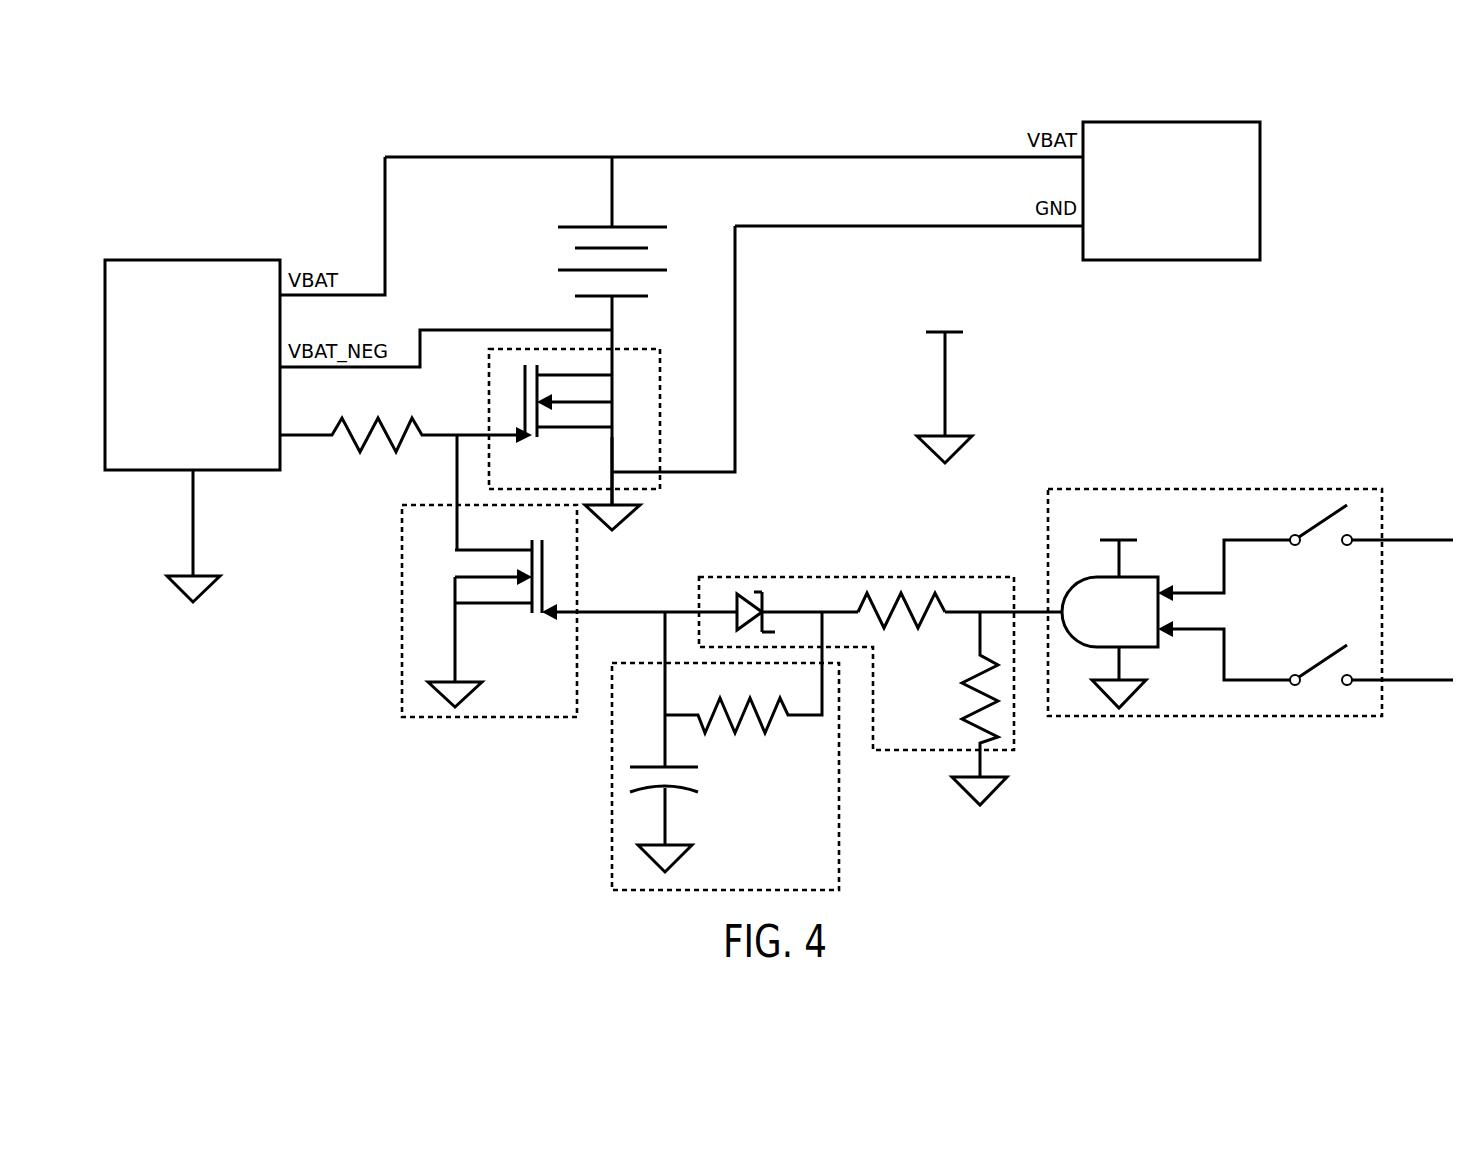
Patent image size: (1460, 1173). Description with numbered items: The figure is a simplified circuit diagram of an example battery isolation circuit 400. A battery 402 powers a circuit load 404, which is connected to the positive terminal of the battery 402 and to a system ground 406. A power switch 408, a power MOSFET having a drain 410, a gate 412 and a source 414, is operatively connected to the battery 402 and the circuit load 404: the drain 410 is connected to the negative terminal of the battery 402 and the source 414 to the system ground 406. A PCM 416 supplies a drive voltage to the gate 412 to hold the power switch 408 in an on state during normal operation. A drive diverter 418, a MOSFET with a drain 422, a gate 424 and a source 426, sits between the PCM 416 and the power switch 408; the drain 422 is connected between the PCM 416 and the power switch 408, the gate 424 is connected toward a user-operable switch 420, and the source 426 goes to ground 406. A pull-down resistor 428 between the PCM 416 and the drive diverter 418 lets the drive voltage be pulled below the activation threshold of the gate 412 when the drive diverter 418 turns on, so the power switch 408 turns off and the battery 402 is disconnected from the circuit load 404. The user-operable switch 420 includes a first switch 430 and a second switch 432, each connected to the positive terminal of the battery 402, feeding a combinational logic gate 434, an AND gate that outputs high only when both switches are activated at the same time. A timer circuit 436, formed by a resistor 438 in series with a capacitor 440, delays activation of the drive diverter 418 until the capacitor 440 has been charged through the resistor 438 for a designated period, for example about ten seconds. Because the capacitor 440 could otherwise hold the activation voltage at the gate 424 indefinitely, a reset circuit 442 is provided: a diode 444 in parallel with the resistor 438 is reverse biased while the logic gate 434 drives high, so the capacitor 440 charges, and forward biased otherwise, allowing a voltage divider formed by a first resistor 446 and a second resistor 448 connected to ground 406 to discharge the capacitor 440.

The battery isolation circuit 400 is at (1362, 146).
The battery 402 is at (652, 225).
The circuit load 404 is at (1156, 218).
The system ground 406 is at (946, 378).
The power switch 408 is at (638, 346).
The drain 410 is at (612, 374).
The gate 412 is at (525, 400).
The source 414 is at (612, 472).
The PCM 416 is at (176, 419).
The drive diverter 418 is at (402, 602).
The user-operable switch 420 is at (1290, 489).
The drain 422 is at (455, 545).
The gate 424 is at (546, 566).
The source 426 is at (455, 652).
The pull-down resistor 428 is at (346, 440).
The first switch 430 is at (1326, 525).
The second switch 432 is at (1323, 662).
The combinational logic gate 434 is at (1138, 576).
The timer circuit 436 is at (612, 862).
The resistor 438 is at (768, 726).
The capacitor 440 is at (678, 792).
The reset circuit 442 is at (930, 577).
The diode 444 is at (745, 612).
The first resistor 446 is at (905, 620).
The second resistor 448 is at (976, 715).